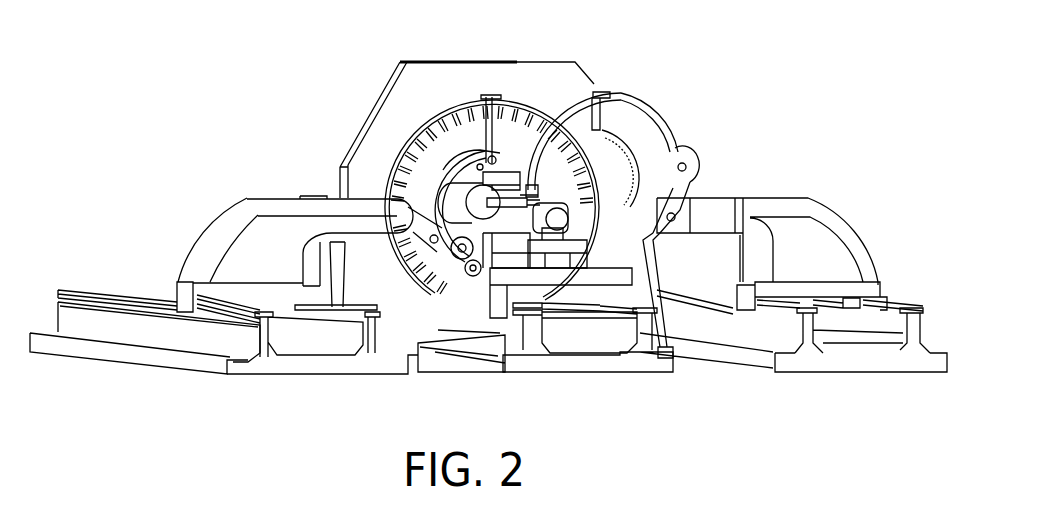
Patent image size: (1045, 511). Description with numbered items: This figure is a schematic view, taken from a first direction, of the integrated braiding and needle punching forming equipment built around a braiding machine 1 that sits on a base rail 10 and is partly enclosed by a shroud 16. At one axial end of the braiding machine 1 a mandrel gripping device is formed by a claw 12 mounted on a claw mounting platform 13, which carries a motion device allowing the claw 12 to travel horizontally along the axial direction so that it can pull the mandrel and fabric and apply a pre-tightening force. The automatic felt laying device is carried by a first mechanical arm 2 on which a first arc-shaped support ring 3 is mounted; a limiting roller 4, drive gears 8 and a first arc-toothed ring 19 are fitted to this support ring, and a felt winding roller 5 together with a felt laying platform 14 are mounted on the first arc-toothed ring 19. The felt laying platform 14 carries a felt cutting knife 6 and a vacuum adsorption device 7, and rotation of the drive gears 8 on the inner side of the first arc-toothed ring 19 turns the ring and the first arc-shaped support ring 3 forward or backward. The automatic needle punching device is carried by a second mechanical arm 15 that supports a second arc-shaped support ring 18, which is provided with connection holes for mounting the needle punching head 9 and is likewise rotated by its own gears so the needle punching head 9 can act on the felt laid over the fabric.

The braiding machine 1 is at (370, 148).
The first mechanical arm 2 is at (245, 253).
The first arc-shaped support ring 3 is at (452, 185).
The limiting roller 4 is at (480, 167).
The felt winding roller 5 is at (446, 197).
The felt cutting knife 6 is at (503, 228).
The vacuum adsorption device 7 is at (506, 250).
The drive gears 8 is at (493, 237).
The needle punching head 9 is at (538, 191).
The base rail 10 is at (843, 337).
The claw 12 is at (563, 235).
The claw mounting platform 13 is at (543, 287).
The felt laying platform 14 is at (540, 145).
The second mechanical arm 15 is at (803, 233).
The shroud 16 is at (663, 150).
The second arc-shaped support ring 18 is at (600, 108).
The first arc-toothed ring 19 is at (440, 252).